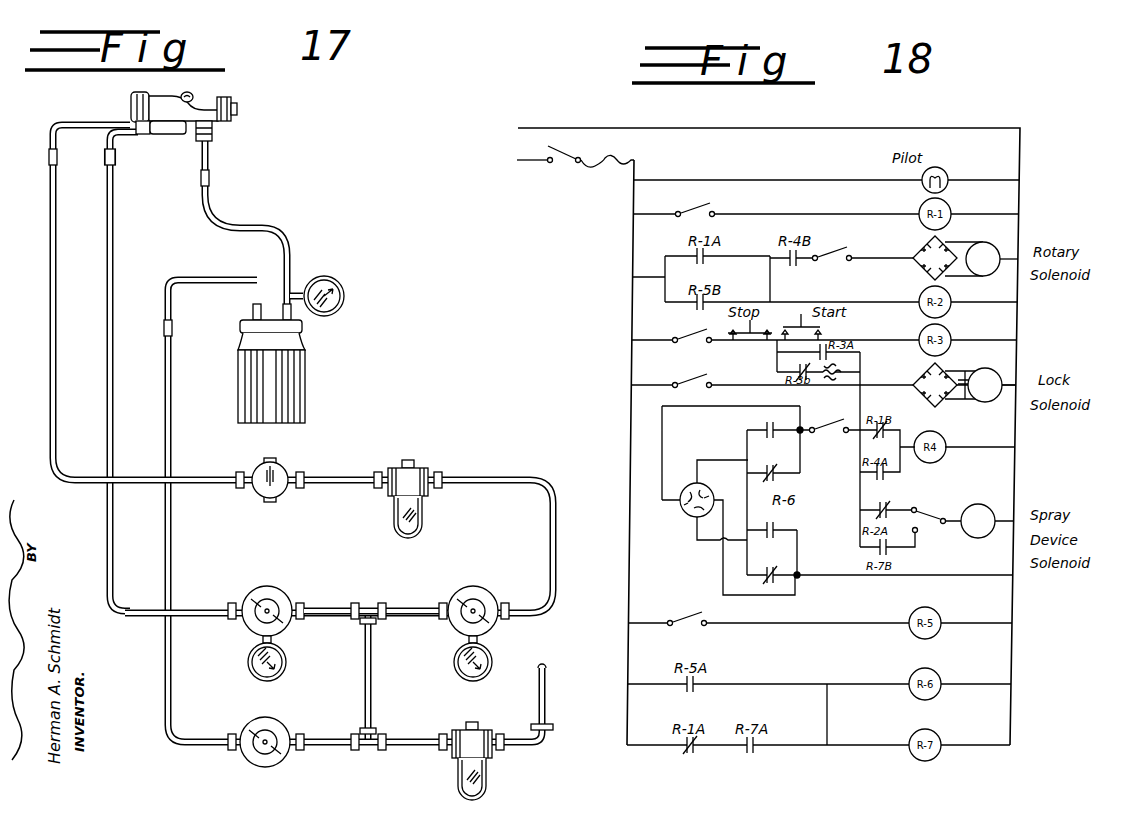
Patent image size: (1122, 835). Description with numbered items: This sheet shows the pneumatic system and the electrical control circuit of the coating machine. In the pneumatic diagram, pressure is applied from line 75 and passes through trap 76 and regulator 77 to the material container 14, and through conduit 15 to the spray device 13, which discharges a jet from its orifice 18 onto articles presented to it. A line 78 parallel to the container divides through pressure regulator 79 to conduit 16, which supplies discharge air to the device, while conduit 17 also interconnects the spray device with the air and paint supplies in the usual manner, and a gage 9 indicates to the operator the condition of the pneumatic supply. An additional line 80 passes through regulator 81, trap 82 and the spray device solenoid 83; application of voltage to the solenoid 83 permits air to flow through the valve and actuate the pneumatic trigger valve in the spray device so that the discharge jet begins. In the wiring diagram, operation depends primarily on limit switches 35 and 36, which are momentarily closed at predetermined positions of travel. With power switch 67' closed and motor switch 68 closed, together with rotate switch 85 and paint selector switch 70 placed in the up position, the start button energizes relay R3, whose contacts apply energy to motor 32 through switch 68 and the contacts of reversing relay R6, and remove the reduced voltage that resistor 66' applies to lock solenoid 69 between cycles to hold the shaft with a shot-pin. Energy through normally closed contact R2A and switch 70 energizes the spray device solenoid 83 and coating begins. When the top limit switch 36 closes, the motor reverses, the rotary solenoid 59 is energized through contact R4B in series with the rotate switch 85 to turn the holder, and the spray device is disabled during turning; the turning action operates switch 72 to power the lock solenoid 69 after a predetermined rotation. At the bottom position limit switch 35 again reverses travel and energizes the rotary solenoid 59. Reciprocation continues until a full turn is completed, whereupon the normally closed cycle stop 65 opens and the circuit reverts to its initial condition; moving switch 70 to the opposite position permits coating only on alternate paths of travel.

In FIG. 17, the spray device 13 is at (118, 105).
In FIG. 17, the orifice 18 is at (235, 110).
In FIG. 17, the conduit 17 is at (49, 241).
In FIG. 17, the conduit 16 is at (116, 272).
In FIG. 17, the conduit 15 is at (239, 225).
In FIG. 17, the gage 9 is at (347, 303).
In FIG. 17, the container 14 is at (308, 398).
In FIG. 17, the spray device solenoid 83 is at (283, 469).
In FIG. 18, the spray device solenoid 83 is at (987, 508).
In FIG. 17, the trap 82 is at (422, 470).
In FIG. 17, the pressure regulator 79 is at (274, 587).
In FIG. 17, the line 80 is at (392, 608).
In FIG. 17, the regulator 81 is at (477, 588).
In FIG. 17, the line 78 is at (371, 701).
In FIG. 17, the line 75 is at (546, 707).
In FIG. 17, the trap 76 is at (492, 784).
In FIG. 17, the regulator 77 is at (264, 767).
In FIG. 18, the power switch 67' is at (575, 170).
In FIG. 18, the limit switch 35 is at (678, 206).
In FIG. 18, the rotate lock switch 85 is at (824, 249).
In FIG. 18, the rotary solenoid 59 is at (1001, 248).
In FIG. 18, the cycle stop 65 is at (696, 343).
In FIG. 18, the resistor 66' is at (846, 374).
In FIG. 18, the lock solenoid 69 is at (996, 374).
In FIG. 18, the switch 72 is at (704, 389).
In FIG. 18, the motor switch 68 is at (838, 424).
In FIG. 18, the motor 32 is at (682, 510).
In FIG. 18, the paint selector switch 70 is at (936, 515).
In FIG. 18, the limit switch 36 is at (698, 627).